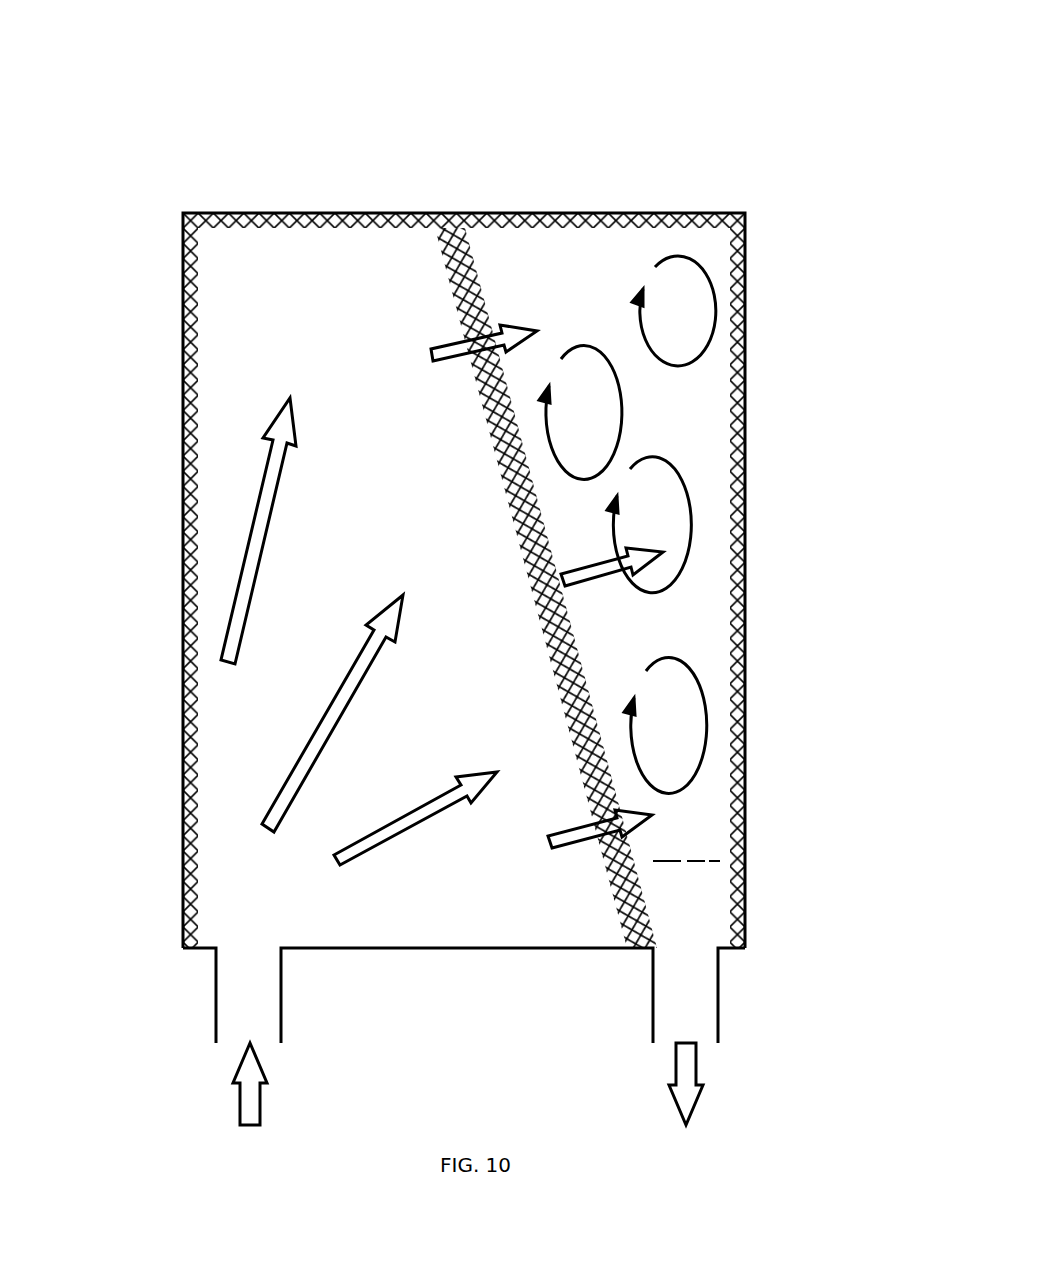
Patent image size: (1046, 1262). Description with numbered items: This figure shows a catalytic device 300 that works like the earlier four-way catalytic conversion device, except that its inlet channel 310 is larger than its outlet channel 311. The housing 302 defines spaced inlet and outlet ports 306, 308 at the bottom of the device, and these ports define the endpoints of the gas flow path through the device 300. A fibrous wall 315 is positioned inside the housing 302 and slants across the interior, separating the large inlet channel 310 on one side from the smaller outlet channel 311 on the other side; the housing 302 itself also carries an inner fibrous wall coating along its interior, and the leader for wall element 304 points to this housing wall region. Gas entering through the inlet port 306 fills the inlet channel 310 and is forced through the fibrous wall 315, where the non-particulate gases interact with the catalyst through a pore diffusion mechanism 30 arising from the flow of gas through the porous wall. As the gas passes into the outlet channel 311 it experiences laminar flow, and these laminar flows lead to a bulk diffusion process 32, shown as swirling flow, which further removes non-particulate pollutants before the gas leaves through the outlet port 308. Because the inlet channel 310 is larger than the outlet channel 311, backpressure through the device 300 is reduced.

The catalytic device 300 is at (847, 90).
The pore diffusion mechanism 30 is at (445, 290).
The fibrous wall 315 is at (478, 307).
The bulk diffusion process 32 is at (702, 415).
The housing 302 is at (743, 522).
The housing wall 304 is at (740, 683).
The inlet channel 310 is at (240, 729).
The outlet channel 311 is at (657, 830).
The inlet port 306 is at (283, 970).
The outlet port 308 is at (718, 978).